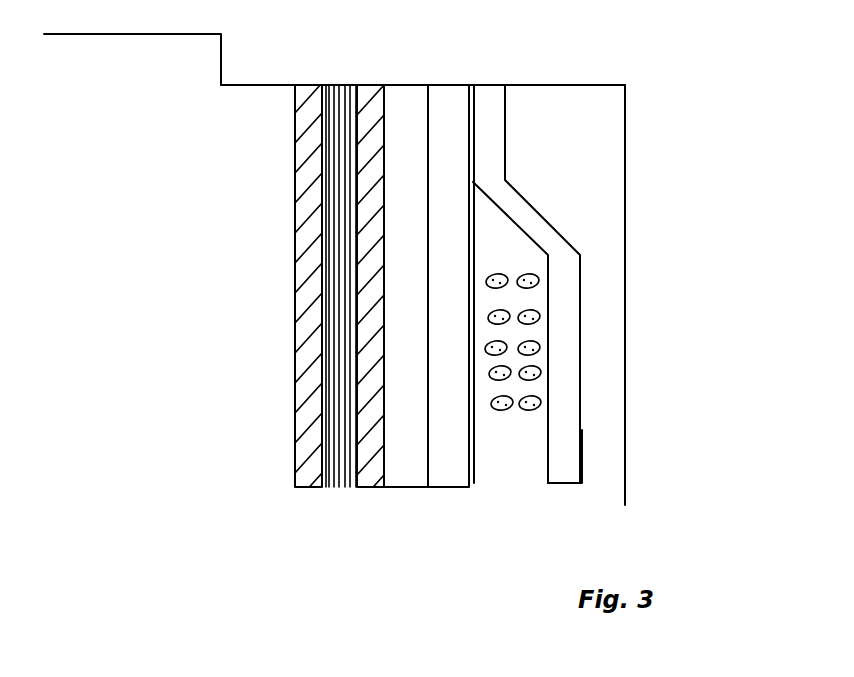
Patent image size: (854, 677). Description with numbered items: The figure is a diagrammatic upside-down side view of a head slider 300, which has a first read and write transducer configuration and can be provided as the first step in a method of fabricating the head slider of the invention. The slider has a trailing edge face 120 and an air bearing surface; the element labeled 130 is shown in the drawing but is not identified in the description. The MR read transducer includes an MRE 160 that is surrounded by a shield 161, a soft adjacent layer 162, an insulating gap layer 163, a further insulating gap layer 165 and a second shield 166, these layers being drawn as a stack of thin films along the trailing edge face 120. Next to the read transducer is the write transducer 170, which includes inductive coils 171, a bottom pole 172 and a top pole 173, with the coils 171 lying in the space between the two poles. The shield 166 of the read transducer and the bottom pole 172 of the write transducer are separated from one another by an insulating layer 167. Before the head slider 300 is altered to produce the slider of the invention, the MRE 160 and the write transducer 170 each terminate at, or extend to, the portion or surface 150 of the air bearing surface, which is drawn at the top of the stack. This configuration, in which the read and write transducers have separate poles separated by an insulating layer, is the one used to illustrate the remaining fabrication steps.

The trailing edge face 120 is at (627, 307).
The base layer 130 is at (157, 34).
The portion or surface of the ABS 150 is at (548, 85).
The MRE 160 is at (343, 85).
The shield 161 is at (299, 489).
The soft adjacent layer 162 is at (330, 490).
The insulating gap layer 163 is at (339, 488).
The insulating gap layer 165 is at (356, 488).
The shield 166 is at (377, 488).
The insulating layer 167 is at (422, 488).
The write transducer 170 is at (489, 64).
The inductive coils 171 is at (512, 423).
The bottom pole 172 is at (458, 487).
The top pole 173 is at (572, 486).
The head slider 300 is at (655, 82).